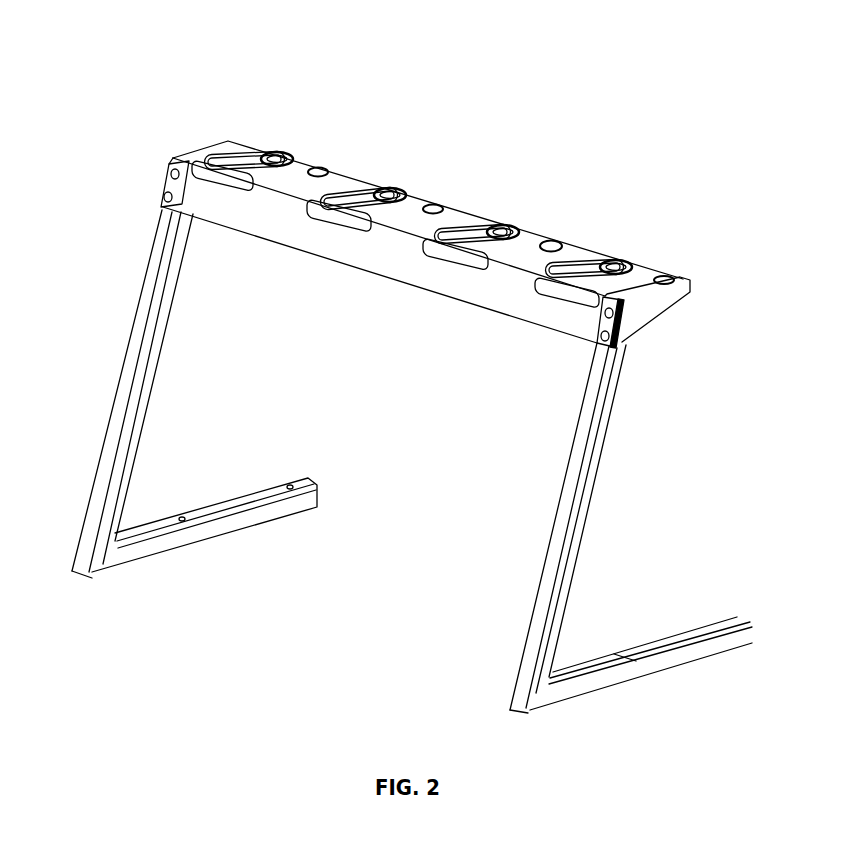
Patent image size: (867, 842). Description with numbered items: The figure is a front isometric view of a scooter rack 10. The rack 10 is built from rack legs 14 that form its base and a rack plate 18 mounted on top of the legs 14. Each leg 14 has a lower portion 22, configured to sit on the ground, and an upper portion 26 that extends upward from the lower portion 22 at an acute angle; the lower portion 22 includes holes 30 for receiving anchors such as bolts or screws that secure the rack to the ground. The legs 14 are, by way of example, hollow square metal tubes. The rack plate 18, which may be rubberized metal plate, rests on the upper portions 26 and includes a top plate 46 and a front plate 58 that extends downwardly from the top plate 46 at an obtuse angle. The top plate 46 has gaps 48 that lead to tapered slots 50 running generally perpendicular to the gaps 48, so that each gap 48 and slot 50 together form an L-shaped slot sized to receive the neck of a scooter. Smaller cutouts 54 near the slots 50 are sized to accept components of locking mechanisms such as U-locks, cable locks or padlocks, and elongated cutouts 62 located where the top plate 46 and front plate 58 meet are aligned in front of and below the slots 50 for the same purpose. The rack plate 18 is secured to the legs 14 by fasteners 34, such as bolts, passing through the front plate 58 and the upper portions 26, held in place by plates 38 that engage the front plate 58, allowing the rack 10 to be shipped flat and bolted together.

The scooter rack 10 is at (555, 162).
The rack legs 14 is at (637, 552).
The rack plate 18 is at (622, 210).
The lower portion 22 is at (673, 657).
The upper portion 26 is at (600, 445).
The holes 30 is at (182, 520).
The fasteners 34 is at (622, 308).
The plates 38 is at (165, 178).
The top plate 46 is at (239, 138).
The gaps 48 is at (415, 203).
The tapered slots 50 is at (446, 340).
The cutouts 54 is at (507, 228).
The front plate 58 is at (522, 303).
The elongated cutouts 62 is at (428, 257).